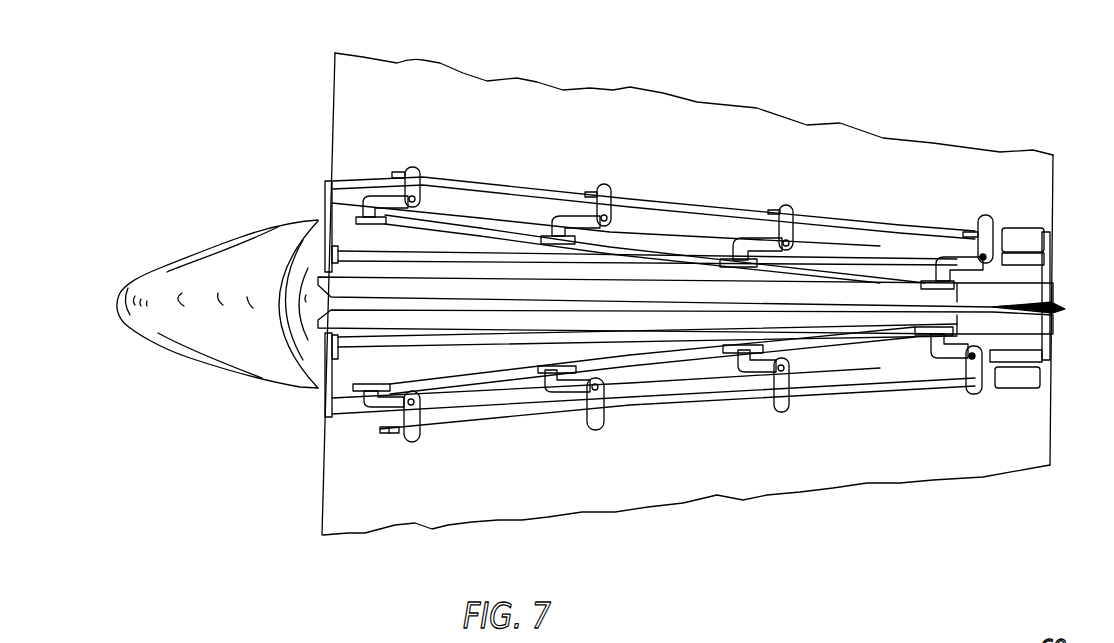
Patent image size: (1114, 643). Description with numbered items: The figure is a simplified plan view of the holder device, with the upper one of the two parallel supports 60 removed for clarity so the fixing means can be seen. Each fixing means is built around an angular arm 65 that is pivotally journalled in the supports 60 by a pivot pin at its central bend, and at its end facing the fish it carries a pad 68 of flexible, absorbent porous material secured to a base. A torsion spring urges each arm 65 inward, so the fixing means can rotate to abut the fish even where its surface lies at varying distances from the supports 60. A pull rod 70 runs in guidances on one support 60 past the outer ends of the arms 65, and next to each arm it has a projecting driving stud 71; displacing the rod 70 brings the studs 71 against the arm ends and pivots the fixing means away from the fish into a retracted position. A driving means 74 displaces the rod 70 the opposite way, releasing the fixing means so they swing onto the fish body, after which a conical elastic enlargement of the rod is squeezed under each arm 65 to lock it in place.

The support 60 is at (350, 412).
The angular arm 65 is at (418, 192).
The pad 68 is at (352, 208).
The pull rod 70 is at (658, 198).
The driving stud 71 is at (403, 168).
The driving means 74 is at (1027, 228).